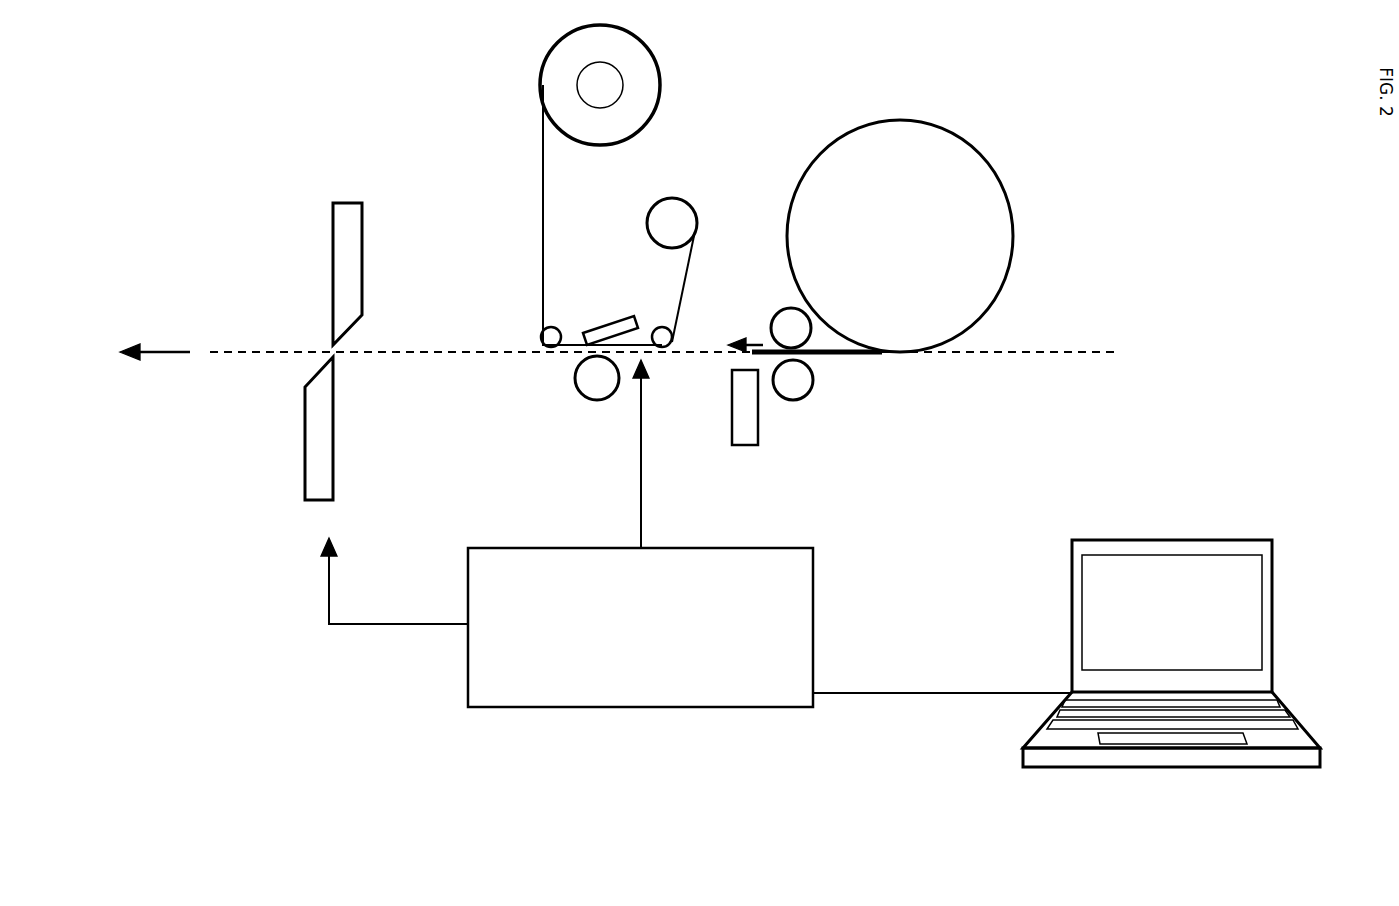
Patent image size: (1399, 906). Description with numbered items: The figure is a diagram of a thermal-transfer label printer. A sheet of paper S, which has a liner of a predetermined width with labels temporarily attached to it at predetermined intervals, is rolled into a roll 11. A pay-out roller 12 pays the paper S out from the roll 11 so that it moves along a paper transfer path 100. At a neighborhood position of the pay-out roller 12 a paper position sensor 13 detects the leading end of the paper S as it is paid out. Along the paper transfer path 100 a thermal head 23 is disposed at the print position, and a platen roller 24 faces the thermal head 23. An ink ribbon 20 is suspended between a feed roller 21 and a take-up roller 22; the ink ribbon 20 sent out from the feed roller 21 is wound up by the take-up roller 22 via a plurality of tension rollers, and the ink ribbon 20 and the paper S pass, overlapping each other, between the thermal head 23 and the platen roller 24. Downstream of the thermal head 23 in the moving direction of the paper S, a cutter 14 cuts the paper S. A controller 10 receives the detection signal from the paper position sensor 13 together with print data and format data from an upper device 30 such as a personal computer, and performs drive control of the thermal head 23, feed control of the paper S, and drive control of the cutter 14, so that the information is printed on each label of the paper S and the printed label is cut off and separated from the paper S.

The controller 10 is at (645, 708).
The roll 11 is at (998, 238).
The pay-out roller 12 is at (826, 383).
The paper position sensor 13 is at (758, 425).
The cutter 14 is at (292, 442).
The ink ribbon 20 is at (541, 183).
The feed roller 21 is at (648, 86).
The take-up roller 22 is at (672, 219).
The thermal head 23 is at (607, 330).
The platen roller 24 is at (596, 393).
The upper device 30 is at (1272, 637).
The paper transfer path 100 is at (255, 350).
The sheet of paper S is at (848, 357).